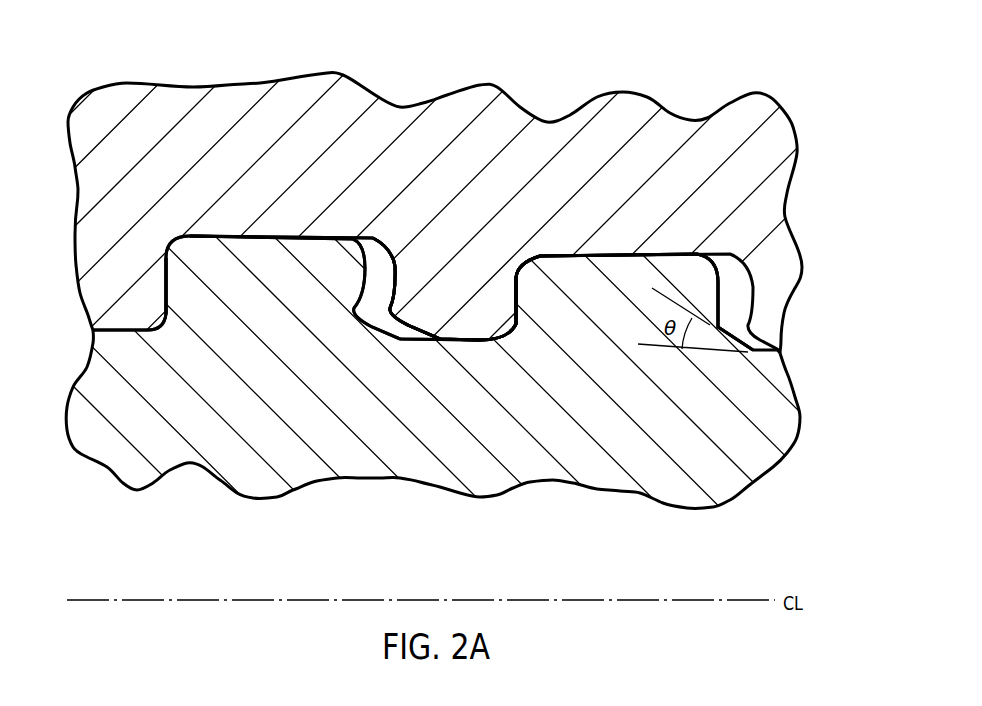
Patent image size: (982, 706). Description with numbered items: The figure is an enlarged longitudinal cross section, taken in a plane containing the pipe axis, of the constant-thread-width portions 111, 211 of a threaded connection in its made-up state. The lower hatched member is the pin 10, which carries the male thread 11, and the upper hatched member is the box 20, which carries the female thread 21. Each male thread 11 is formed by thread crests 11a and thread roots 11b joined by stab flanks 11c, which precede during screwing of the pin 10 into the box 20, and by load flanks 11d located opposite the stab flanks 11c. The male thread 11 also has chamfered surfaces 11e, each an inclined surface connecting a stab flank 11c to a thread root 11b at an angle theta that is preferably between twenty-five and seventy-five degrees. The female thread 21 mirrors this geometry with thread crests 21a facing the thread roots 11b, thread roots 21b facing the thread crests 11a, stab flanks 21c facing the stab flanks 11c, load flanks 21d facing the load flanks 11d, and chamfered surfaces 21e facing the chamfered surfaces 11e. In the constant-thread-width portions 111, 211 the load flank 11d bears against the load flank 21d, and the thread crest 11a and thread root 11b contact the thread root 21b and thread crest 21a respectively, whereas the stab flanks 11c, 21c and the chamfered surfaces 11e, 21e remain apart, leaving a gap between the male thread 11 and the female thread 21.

The pin 10 is at (772, 494).
The male thread 11 is at (602, 292).
The constant-thread-width portion 111 is at (597, 282).
The thread crest 11a is at (278, 238).
The thread root 11b is at (473, 340).
The stab flank 11c is at (350, 246).
The load flank 11d is at (170, 293).
The chamfered surface 11e is at (375, 338).
The box 20 is at (720, 88).
The female thread 21 is at (650, 215).
The constant-thread-width portion 211 is at (645, 224).
The thread crest 21a is at (480, 340).
The thread root 21b is at (242, 233).
The stab flank 21c is at (397, 277).
The load flank 21d is at (160, 277).
The chamfered surface 21e is at (417, 327).